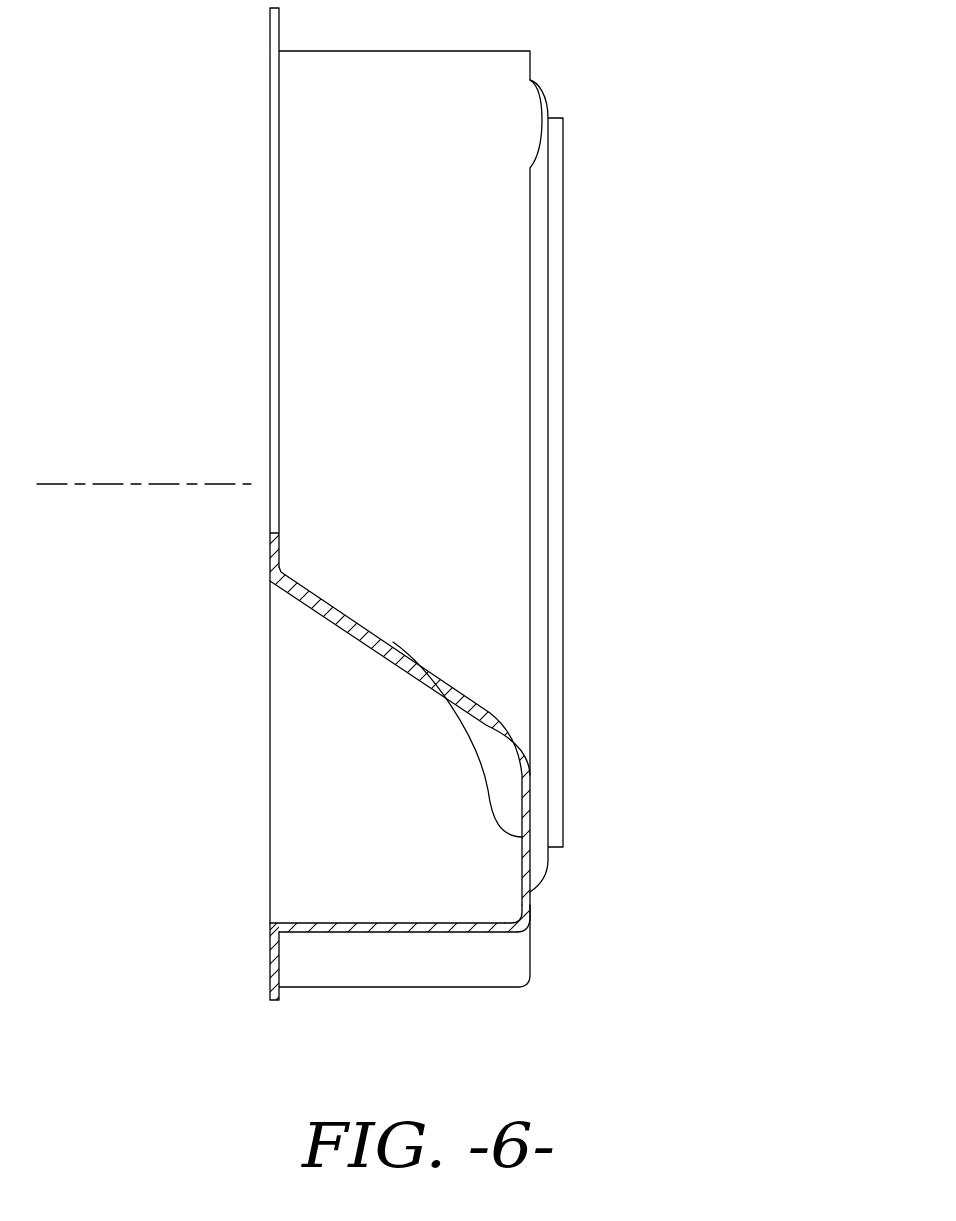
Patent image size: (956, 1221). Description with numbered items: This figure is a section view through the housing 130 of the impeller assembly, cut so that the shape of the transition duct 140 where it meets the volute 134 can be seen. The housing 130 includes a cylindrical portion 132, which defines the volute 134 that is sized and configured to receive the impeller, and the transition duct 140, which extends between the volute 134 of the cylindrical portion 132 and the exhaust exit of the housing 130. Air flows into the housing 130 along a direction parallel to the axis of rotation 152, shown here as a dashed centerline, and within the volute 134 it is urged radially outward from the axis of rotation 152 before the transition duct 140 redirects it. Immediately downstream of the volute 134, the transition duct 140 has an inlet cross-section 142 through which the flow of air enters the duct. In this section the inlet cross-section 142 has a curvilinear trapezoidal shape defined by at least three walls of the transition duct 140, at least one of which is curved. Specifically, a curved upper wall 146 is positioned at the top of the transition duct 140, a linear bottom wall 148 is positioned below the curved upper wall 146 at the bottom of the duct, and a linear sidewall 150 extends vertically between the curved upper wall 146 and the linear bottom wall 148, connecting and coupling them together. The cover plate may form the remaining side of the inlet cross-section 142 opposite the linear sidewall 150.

The housing 130 is at (530, 51).
The cylindrical portion 132 is at (503, 338).
The volute 134 is at (310, 627).
The transition duct 140 is at (533, 935).
The inlet cross-section 142 is at (268, 822).
The curved upper wall 146 is at (390, 637).
The linear bottom wall 148 is at (407, 930).
The linear sidewall 150 is at (530, 813).
The axis of rotation 152 is at (145, 483).